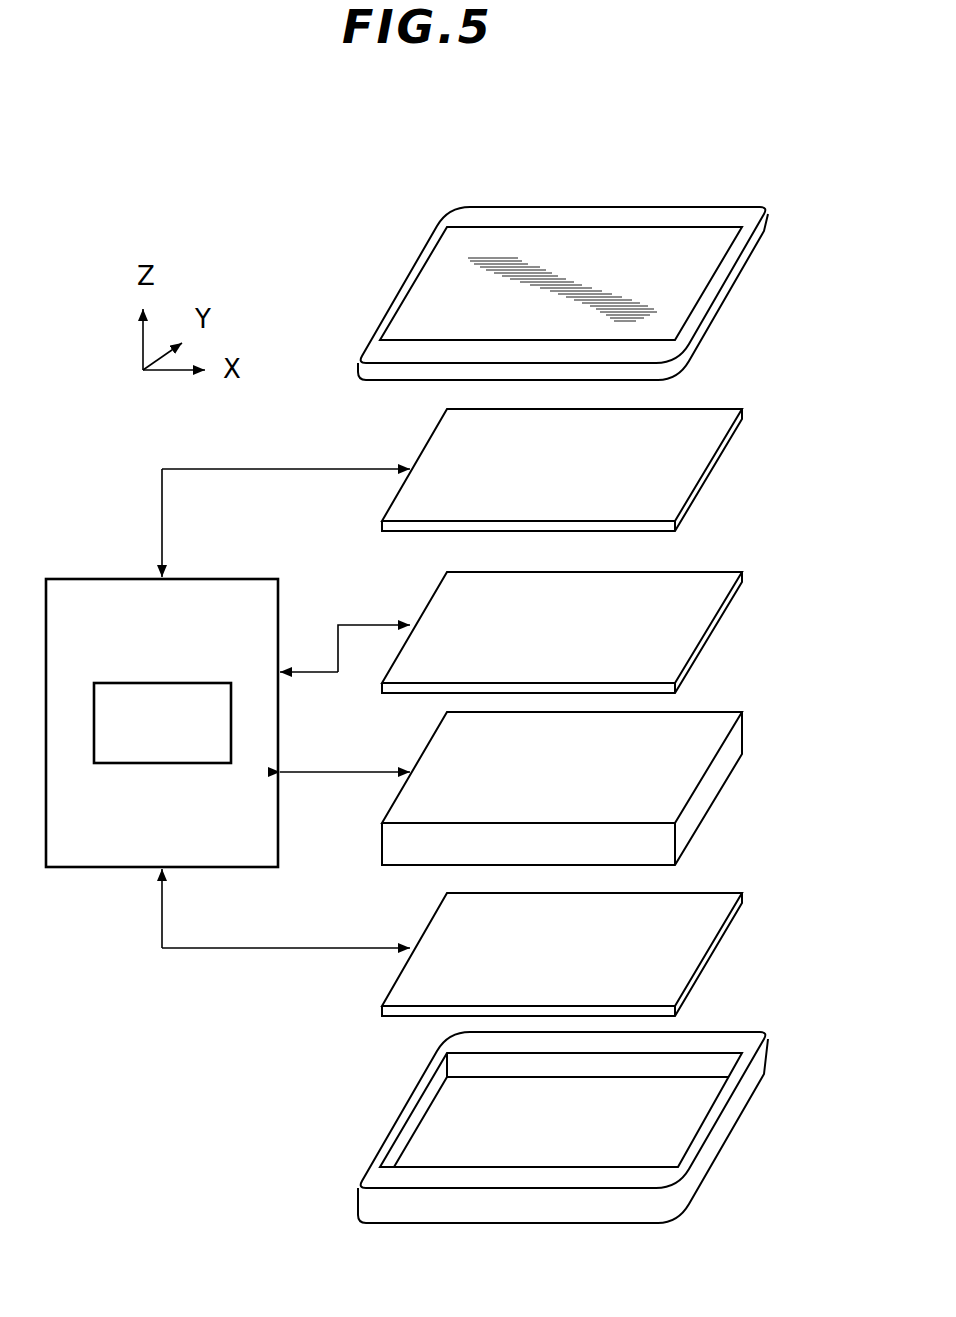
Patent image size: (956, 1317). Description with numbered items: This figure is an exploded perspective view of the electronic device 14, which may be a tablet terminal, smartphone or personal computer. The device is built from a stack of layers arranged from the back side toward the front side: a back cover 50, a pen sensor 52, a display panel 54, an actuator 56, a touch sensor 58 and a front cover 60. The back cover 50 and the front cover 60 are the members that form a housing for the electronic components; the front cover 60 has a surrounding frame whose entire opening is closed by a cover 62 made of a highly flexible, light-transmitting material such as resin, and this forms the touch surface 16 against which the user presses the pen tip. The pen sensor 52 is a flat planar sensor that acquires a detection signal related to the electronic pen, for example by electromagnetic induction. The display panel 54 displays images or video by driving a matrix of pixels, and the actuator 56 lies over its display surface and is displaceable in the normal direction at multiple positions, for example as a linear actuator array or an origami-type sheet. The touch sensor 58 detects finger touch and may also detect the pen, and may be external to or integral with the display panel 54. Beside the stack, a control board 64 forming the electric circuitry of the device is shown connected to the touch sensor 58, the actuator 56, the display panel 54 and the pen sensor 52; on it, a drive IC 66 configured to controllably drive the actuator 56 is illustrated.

The electronic device 14 is at (287, 182).
The touch surface 16 is at (440, 290).
The back cover 50 is at (727, 1132).
The pen sensor 52 is at (676, 953).
The display panel 54 is at (680, 778).
The actuator 56 is at (676, 637).
The touch sensor 58 is at (673, 481).
The front cover 60 is at (708, 308).
The cover 62 is at (592, 247).
The control board 64 is at (108, 578).
The drive IC 66 is at (172, 764).